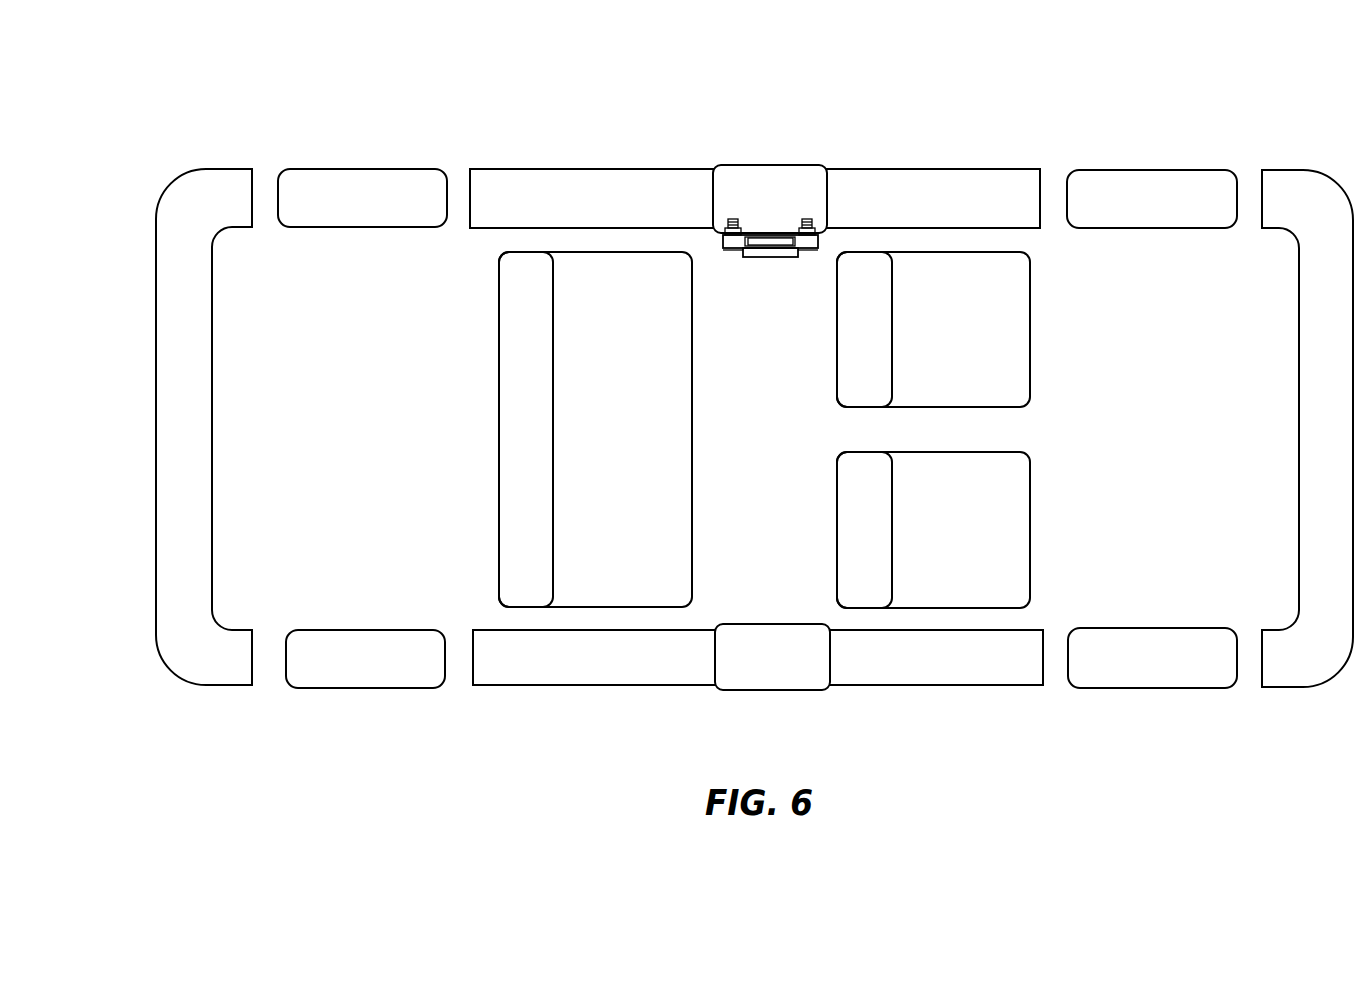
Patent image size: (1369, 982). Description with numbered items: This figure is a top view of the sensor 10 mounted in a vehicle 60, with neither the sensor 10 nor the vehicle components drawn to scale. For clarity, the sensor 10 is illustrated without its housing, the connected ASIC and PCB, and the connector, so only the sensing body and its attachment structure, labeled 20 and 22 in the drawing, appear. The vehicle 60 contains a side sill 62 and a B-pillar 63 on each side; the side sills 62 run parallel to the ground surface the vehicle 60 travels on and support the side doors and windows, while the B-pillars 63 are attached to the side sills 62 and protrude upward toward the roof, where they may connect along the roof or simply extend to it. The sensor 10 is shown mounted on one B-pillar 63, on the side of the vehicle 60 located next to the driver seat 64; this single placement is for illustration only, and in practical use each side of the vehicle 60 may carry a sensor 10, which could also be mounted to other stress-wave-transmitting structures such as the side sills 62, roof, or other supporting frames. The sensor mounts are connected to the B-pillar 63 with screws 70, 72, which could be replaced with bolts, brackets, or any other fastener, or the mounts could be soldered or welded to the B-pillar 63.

The sensor 10 is at (800, 261).
The sensor body 20 is at (820, 240).
The sensing element 22 is at (780, 240).
The vehicle 60 is at (115, 189).
The side sill 62 is at (560, 180).
The B-pillar 63 is at (767, 178).
The driver seat 64 is at (932, 267).
The screw 70 is at (733, 258).
The screw 72 is at (808, 258).